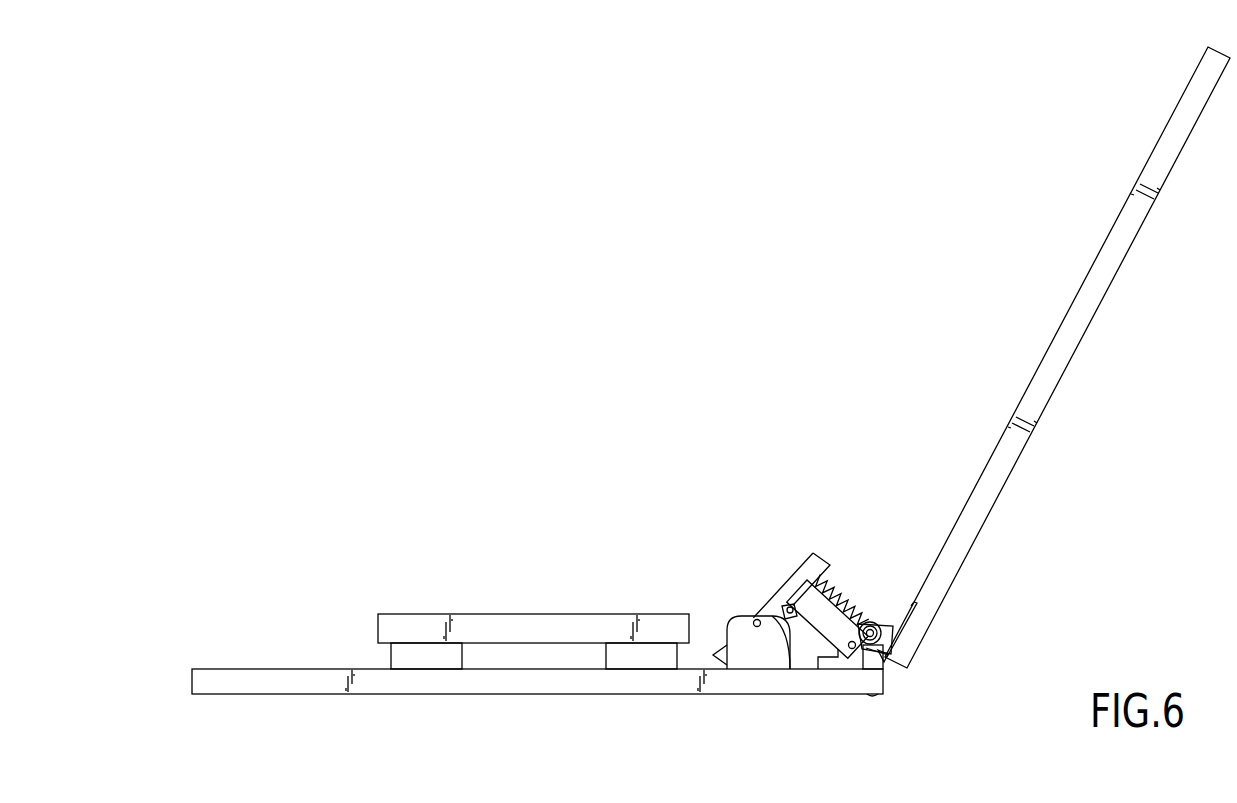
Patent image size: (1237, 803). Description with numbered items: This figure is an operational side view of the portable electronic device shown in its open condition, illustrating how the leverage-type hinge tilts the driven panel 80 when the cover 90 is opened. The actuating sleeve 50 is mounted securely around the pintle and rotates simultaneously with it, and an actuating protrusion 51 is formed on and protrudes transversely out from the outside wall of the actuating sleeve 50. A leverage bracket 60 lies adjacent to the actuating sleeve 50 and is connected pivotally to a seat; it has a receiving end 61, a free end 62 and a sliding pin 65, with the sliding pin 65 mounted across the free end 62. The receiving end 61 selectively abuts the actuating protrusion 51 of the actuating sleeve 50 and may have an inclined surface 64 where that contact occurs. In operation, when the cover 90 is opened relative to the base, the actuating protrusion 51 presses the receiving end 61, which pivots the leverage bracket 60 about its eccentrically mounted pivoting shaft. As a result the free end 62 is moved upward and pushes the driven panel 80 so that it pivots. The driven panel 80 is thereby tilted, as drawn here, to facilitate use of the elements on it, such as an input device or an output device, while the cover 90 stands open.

The actuating sleeve 50 is at (872, 622).
The actuating protrusion 51 is at (866, 657).
The leverage bracket 60 is at (838, 632).
The receiving end 61 is at (880, 662).
The free end 62 is at (787, 606).
The inclined surface 64 is at (888, 653).
The sliding pin 65 is at (780, 620).
The driven panel 80 is at (790, 587).
The cover 90 is at (1047, 382).